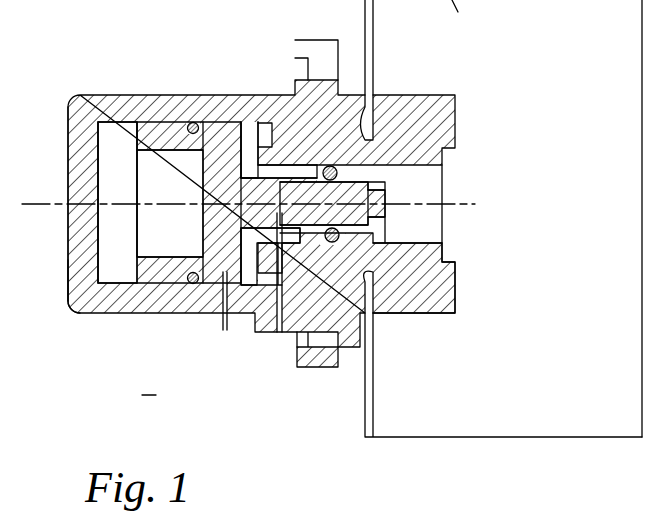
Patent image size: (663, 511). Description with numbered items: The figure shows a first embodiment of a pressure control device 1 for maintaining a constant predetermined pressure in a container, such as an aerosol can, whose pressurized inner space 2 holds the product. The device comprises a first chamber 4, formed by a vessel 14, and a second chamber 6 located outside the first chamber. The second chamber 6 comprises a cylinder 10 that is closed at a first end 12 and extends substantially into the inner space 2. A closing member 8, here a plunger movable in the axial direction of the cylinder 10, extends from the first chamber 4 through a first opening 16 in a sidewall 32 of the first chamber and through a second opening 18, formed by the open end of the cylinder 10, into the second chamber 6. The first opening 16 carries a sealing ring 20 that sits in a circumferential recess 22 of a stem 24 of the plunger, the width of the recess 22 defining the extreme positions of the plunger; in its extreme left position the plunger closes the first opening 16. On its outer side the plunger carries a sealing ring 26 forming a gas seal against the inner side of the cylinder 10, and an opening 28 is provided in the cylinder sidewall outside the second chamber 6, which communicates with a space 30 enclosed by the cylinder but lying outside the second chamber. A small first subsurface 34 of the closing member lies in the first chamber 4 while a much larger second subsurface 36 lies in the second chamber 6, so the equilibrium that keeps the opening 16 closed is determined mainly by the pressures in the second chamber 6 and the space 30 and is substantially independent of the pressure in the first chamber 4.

The pressure control device 1 is at (392, 465).
The inner space 2 is at (261, 198).
The first chamber 4 is at (561, 217).
The second chamber 6 is at (112, 198).
The closing member 8 is at (150, 268).
The cylinder 10 is at (82, 313).
The first end 12 is at (78, 225).
The vessel 14 is at (466, 18).
The first opening 16 is at (378, 230).
The second opening 18 is at (228, 121).
The sealing ring 20 is at (410, 138).
The circumferential recess 22 is at (370, 205).
The stem 24 is at (278, 332).
The sealing ring 26 is at (186, 121).
The opening 28 is at (215, 318).
The space 30 is at (249, 137).
The sidewall 32 is at (375, 73).
The first subsurface 34 is at (386, 210).
The second subsurface 36 is at (137, 146).